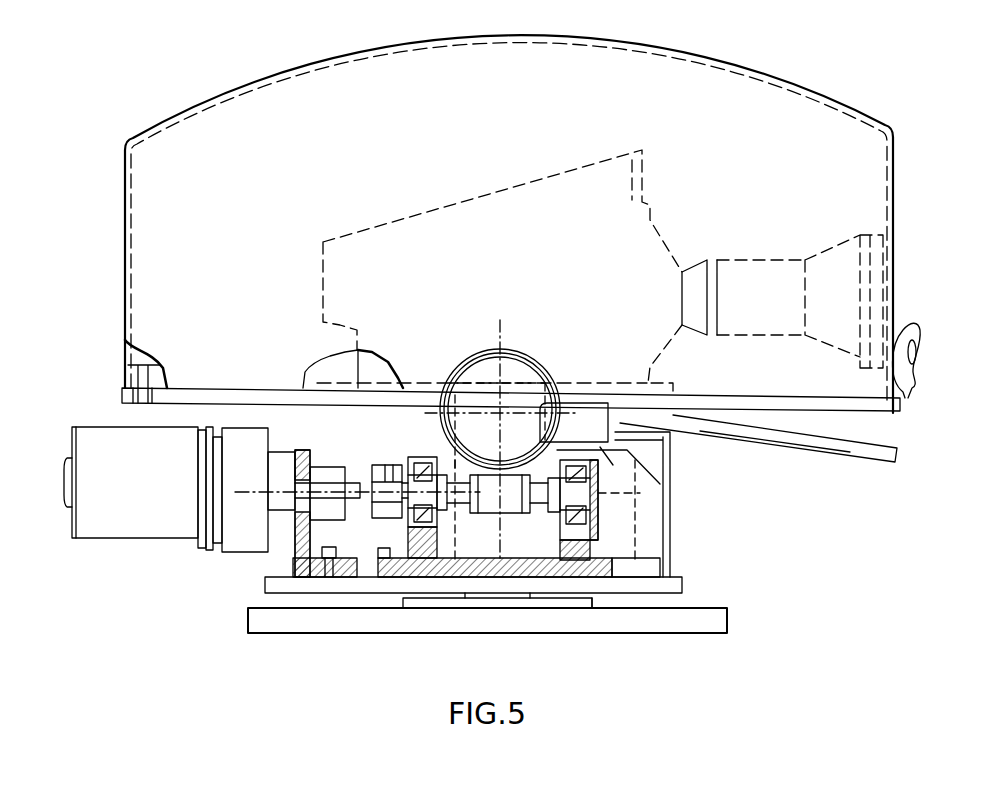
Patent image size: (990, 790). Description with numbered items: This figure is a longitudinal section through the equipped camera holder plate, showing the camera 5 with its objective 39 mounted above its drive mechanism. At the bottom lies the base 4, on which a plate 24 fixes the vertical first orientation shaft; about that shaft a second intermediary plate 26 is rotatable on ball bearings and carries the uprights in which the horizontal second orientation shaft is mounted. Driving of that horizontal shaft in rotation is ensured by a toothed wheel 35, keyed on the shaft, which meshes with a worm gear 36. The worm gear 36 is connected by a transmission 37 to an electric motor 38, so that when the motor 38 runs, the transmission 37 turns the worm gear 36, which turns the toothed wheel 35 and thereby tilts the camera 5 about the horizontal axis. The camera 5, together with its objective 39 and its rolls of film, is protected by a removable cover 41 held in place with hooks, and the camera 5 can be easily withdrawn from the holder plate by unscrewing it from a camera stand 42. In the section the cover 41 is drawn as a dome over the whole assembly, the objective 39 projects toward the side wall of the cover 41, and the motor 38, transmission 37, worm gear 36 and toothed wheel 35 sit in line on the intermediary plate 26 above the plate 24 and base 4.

The base 4 is at (678, 622).
The camera 5 is at (468, 228).
The plate 24 is at (595, 603).
The second intermediary plate 26 is at (275, 583).
The toothed wheel 35 is at (530, 432).
The worm gear 36 is at (510, 505).
The transmission 37 is at (358, 505).
The electric motor 38 is at (140, 507).
The objective 39 is at (775, 268).
The removable cover 41 is at (125, 258).
The camera stand 42 is at (318, 385).